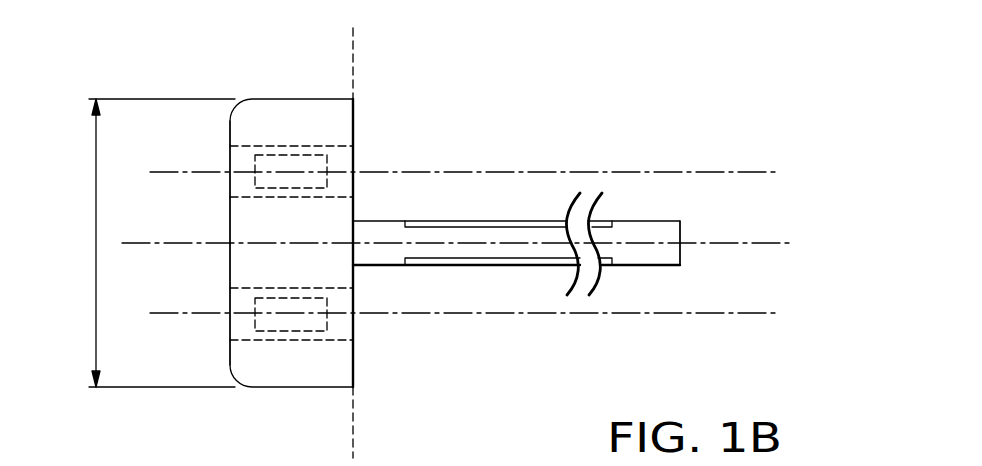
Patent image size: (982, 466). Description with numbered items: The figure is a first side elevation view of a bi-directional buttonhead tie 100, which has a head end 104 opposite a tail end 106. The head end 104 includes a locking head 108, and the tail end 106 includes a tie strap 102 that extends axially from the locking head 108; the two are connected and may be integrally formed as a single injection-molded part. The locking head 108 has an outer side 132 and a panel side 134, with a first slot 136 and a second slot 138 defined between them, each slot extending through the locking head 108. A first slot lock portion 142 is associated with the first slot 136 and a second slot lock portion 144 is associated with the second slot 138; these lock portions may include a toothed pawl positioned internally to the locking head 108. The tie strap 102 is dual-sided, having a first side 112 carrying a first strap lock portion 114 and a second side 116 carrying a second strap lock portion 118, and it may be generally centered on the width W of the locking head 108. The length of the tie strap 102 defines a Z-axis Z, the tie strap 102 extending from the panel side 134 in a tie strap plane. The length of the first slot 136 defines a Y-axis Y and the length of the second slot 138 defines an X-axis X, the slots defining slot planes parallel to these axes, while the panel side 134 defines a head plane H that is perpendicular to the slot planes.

The bi-directional buttonhead tie 100 is at (180, 40).
The tie strap 102 is at (650, 229).
The head end 104 is at (230, 261).
The tail end 106 is at (682, 255).
The locking head 108 is at (307, 98).
The first side 112 is at (541, 221).
The first strap lock portion 114 is at (478, 221).
The second side 116 is at (541, 265).
The second strap lock portion 118 is at (478, 265).
The outer side 132 is at (230, 227).
The panel side 134 is at (355, 365).
The first slot 136 is at (333, 146).
The second slot 138 is at (270, 341).
The first slot lock portion 142 is at (327, 180).
The second slot lock portion 144 is at (327, 306).
The width W is at (89, 234).
The head plane H is at (352, 229).
The X-axis X is at (475, 315).
The Y-axis Y is at (474, 174).
The Z-axis Z is at (468, 244).